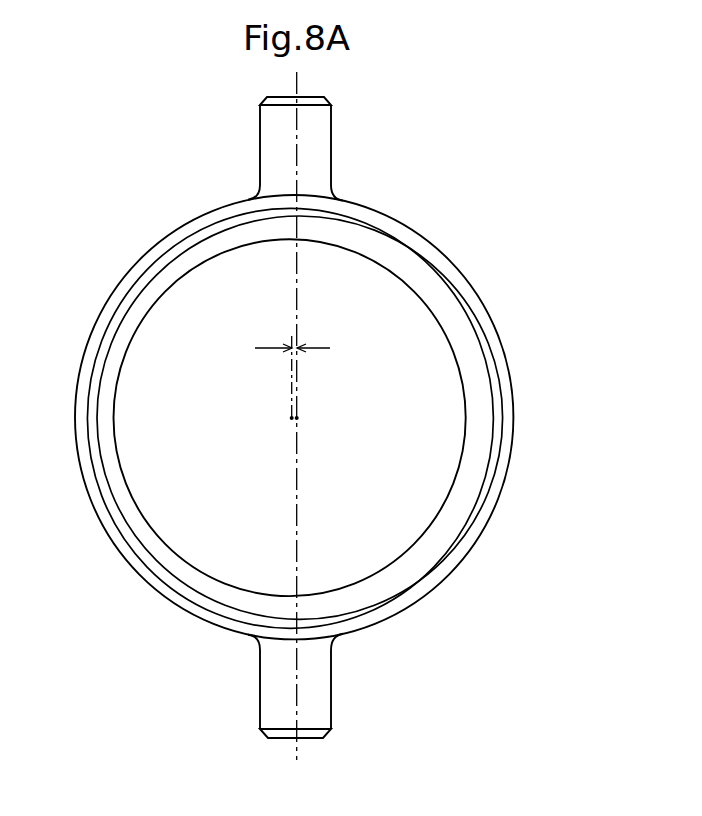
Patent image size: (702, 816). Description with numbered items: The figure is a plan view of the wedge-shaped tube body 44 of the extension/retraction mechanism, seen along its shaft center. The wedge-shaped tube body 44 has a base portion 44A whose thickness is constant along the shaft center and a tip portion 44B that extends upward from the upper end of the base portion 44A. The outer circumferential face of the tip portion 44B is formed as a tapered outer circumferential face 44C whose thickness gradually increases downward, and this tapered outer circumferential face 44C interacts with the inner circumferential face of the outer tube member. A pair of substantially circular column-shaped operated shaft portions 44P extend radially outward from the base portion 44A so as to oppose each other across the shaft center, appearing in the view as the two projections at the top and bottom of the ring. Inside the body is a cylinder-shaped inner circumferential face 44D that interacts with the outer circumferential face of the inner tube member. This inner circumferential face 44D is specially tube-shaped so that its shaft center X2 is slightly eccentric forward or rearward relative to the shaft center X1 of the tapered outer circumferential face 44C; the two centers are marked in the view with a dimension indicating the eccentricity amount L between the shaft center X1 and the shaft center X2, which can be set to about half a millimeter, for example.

The wedge-shaped tube body 44 is at (317, 417).
The base portion 44A is at (100, 524).
The tip portion 44B is at (483, 412).
The tapered outer circumferential face 44C is at (448, 286).
The cylinder-shaped inner circumferential face 44D is at (165, 291).
The operated shaft portions 44P is at (262, 150).
The shaft center of the tapered outer circumferential face X1 is at (297, 418).
The shaft center of the inner circumferential face X2 is at (292, 418).
The eccentricity amount L is at (292, 333).